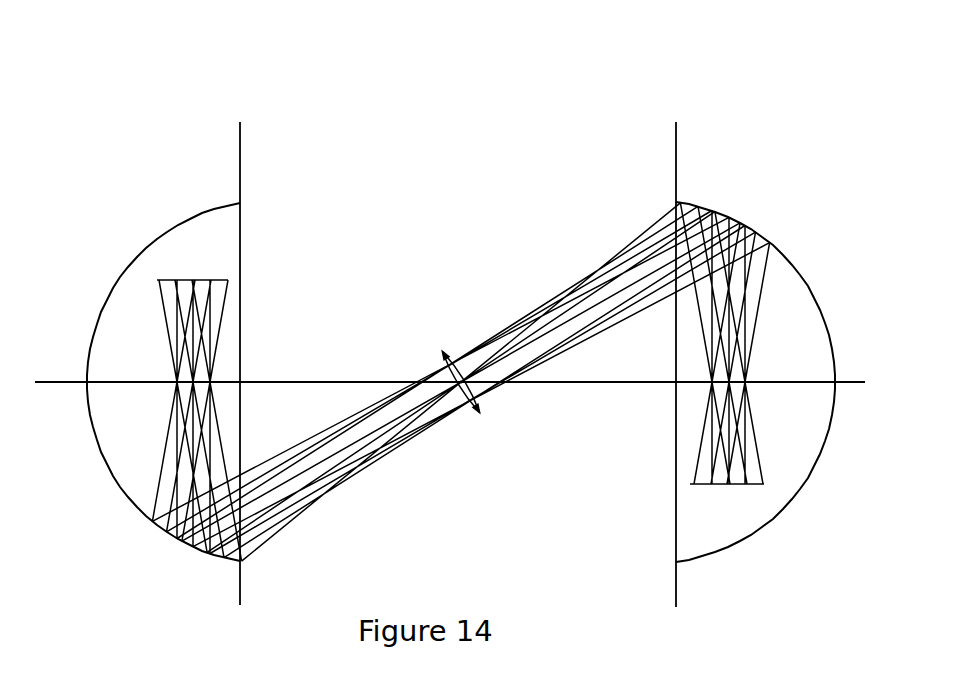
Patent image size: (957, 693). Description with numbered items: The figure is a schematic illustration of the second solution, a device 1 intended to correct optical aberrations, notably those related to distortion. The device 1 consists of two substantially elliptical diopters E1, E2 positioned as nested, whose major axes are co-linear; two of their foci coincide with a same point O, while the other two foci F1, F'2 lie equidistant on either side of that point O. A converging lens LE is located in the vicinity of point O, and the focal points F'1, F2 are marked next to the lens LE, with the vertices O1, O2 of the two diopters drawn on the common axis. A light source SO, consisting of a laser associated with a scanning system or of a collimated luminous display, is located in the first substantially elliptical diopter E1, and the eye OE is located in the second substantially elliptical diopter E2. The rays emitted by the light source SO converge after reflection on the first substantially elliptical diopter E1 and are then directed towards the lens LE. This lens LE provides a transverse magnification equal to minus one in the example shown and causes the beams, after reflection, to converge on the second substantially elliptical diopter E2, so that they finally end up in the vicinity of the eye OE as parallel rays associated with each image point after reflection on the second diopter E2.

The optical system 1 is at (489, 90).
The first substantially elliptical diopter E1 is at (146, 250).
The second substantially elliptical diopter E2 is at (796, 275).
The light source SO is at (183, 279).
The eye OE is at (718, 486).
The converging lens LE is at (487, 399).
The point O is at (470, 347).
The focus F1 is at (167, 397).
The vertex of first mirror axis O1 is at (258, 397).
The vertex of second mirror axis O2 is at (660, 397).
The focus F'2 is at (755, 397).
The image focal point of first mirror F'1 is at (472, 418).
The object focal point of second mirror F2 is at (471, 430).